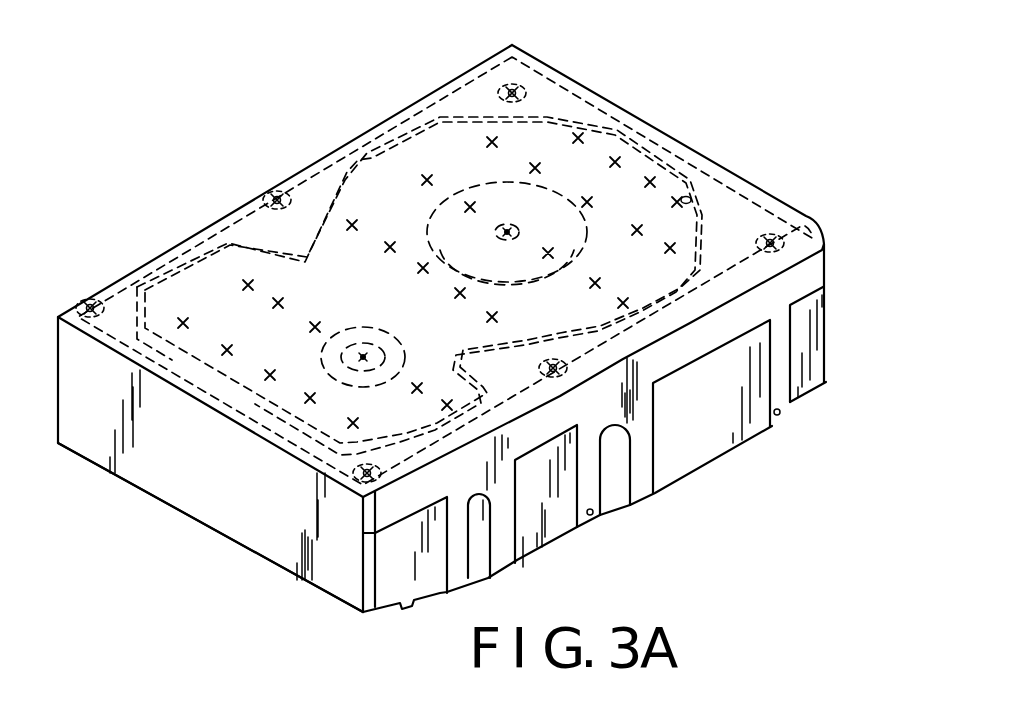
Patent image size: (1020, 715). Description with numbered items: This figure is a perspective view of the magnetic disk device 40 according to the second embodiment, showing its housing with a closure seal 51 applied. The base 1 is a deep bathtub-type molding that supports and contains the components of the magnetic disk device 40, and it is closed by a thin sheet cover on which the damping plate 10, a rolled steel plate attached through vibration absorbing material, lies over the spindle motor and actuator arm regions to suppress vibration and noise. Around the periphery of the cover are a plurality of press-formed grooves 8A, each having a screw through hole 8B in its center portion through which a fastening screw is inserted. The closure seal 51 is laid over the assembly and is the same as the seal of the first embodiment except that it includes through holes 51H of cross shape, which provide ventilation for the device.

The magnetic disk device 40 is at (164, 165).
The base 1 is at (184, 497).
The damping plate 10 is at (680, 127).
The closure seal 51 is at (570, 115).
The through holes 51H is at (679, 203).
The grooves 8A is at (497, 86).
The screw through holes 8B is at (88, 298).